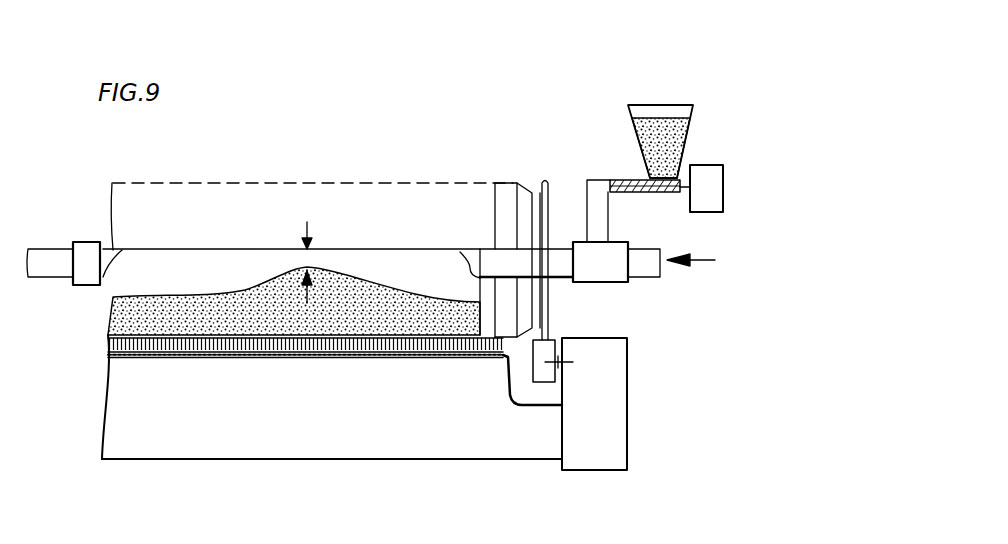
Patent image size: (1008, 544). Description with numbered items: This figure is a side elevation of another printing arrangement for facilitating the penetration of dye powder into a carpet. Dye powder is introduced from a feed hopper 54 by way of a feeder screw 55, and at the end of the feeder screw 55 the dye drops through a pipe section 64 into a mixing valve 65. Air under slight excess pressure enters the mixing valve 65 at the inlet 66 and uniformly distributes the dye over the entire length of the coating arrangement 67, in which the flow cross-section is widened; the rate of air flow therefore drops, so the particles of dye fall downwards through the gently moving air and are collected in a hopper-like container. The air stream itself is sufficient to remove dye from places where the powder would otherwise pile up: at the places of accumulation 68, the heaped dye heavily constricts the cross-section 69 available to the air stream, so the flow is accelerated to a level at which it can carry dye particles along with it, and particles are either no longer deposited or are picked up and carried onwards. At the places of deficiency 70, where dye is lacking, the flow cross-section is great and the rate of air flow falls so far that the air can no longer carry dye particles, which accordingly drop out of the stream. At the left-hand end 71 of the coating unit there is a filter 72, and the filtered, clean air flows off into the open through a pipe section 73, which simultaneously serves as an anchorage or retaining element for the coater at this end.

The feed hopper 54 is at (645, 142).
The feeder screw 55 is at (623, 182).
The pipe section 64 is at (600, 214).
The mixing valve 65 is at (610, 277).
The air inlet 66 is at (647, 260).
The coating arrangement 67 is at (428, 272).
The places of dye accumulation 68 is at (323, 258).
The cross-section available to the air stream 69 is at (303, 258).
The places of dye deficiency 70 is at (173, 277).
The left-hand end of the coating unit 71 is at (102, 237).
The filter 72 is at (87, 277).
The pipe section 73 is at (58, 265).